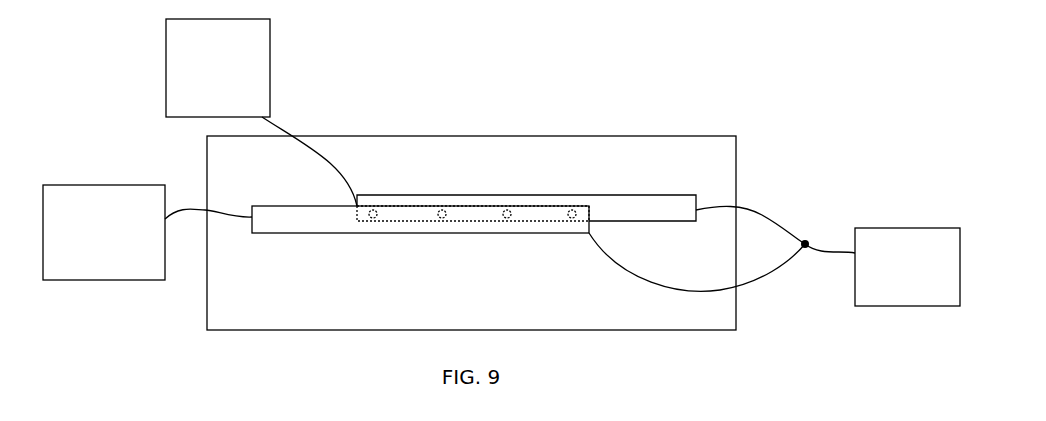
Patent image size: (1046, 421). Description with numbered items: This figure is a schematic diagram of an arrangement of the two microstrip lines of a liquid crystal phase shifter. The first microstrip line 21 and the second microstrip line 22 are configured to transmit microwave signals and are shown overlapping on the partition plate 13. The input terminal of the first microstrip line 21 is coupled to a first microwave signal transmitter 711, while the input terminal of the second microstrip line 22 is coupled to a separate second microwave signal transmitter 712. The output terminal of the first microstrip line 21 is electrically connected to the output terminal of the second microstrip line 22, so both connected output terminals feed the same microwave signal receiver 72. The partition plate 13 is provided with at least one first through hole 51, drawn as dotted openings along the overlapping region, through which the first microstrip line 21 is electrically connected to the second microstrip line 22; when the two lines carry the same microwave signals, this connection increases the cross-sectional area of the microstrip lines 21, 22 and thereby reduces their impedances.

The partition plate 13 is at (722, 160).
The first microstrip line 21 is at (325, 228).
The second microstrip line 22 is at (516, 195).
The first through hole 51 is at (443, 213).
The first microwave signal transmitter 711 is at (130, 185).
The second microwave signal transmitter 712 is at (270, 98).
The microwave signal receiver 72 is at (895, 228).